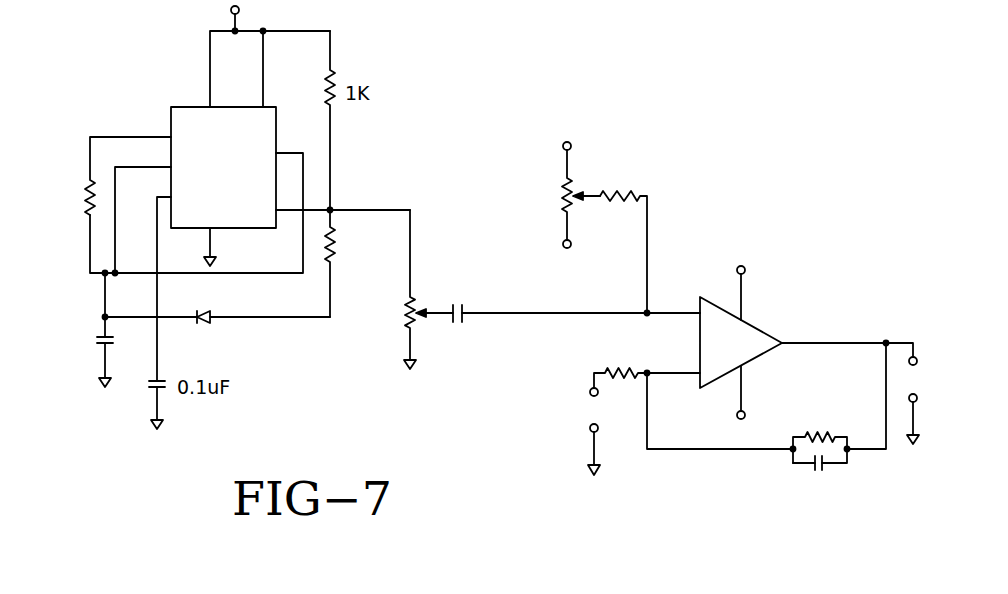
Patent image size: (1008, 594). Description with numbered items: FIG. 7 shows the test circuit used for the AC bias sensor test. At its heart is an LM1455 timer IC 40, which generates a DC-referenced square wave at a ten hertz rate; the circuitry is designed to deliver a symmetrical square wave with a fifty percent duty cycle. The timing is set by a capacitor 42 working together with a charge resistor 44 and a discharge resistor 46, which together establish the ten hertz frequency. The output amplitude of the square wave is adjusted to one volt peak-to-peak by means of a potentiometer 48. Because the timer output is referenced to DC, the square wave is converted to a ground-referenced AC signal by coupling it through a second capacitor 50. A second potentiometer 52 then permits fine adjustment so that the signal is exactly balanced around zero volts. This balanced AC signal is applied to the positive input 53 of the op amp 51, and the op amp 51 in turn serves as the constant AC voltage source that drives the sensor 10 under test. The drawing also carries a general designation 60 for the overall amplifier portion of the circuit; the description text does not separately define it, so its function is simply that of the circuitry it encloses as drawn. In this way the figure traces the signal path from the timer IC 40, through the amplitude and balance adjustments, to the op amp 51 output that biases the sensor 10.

The timer IC 40 is at (190, 107).
The discharge resistor 46 is at (85, 205).
The capacitor 42 is at (103, 344).
The charge resistor 44 is at (340, 250).
The potentiometer 48 is at (413, 300).
The second capacitor 50 is at (464, 322).
The second potentiometer 52 is at (565, 183).
The positive input 53 is at (690, 312).
The op amp 51 is at (765, 332).
The amplifier circuit 60 is at (492, 120).
The sensor 10 is at (587, 413).